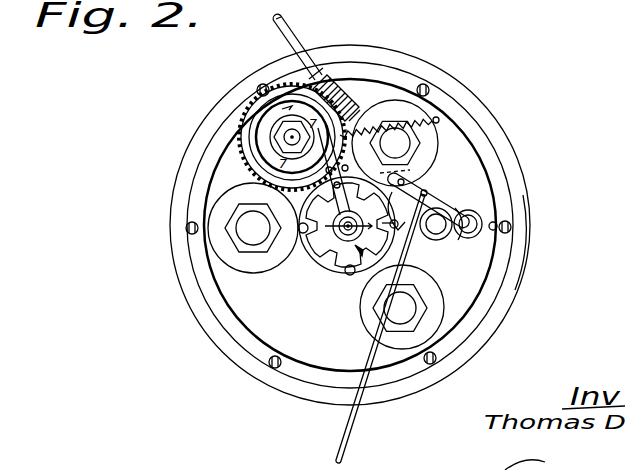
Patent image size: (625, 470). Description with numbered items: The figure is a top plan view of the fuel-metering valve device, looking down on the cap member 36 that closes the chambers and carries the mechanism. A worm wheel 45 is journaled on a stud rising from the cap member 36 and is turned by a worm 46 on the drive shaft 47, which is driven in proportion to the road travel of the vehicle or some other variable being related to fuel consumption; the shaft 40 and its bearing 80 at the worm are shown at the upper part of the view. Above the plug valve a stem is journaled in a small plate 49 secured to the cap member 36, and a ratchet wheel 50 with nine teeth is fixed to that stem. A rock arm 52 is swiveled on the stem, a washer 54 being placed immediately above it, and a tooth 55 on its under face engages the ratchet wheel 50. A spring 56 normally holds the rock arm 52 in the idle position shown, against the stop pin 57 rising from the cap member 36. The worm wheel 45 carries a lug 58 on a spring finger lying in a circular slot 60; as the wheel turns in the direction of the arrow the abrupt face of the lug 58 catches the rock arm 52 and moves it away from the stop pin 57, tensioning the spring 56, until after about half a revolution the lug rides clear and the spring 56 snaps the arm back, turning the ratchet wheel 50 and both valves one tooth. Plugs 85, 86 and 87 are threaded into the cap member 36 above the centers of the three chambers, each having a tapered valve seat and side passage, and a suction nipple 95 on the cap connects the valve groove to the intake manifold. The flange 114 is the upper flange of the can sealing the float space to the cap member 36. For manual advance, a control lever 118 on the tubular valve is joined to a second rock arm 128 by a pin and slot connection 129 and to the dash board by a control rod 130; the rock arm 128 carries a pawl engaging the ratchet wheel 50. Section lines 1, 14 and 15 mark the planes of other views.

The section line 1- 1 is at (153, 211).
The section line 14- 14 is at (228, 55).
The section line 15- 15 is at (437, 52).
The cap member 36 is at (326, 351).
The winding stem 40 is at (289, 40).
The worm wheel 45 is at (270, 138).
The worm 46 is at (352, 92).
The drive shaft 47 is at (293, 44).
The small plate 49 is at (243, 253).
The ratchet wheel 50 is at (340, 240).
The rock arm 52 is at (300, 200).
The washer 54 is at (312, 240).
The tooth 55 is at (425, 176).
The spring 56 is at (428, 124).
The stop pin 57 is at (440, 130).
The lug 58 is at (252, 154).
The circular slot 60 is at (255, 112).
The worm bearing 80 is at (362, 60).
The plug 85 is at (213, 243).
The plug 86 is at (400, 143).
The plug 87 is at (437, 304).
The suction nipple 95 is at (455, 240).
The flange 114 is at (468, 341).
The control lever 118 is at (475, 203).
The rock arm 128 is at (440, 240).
The pin and slot connection 129 is at (470, 185).
The control rod 130 is at (345, 422).